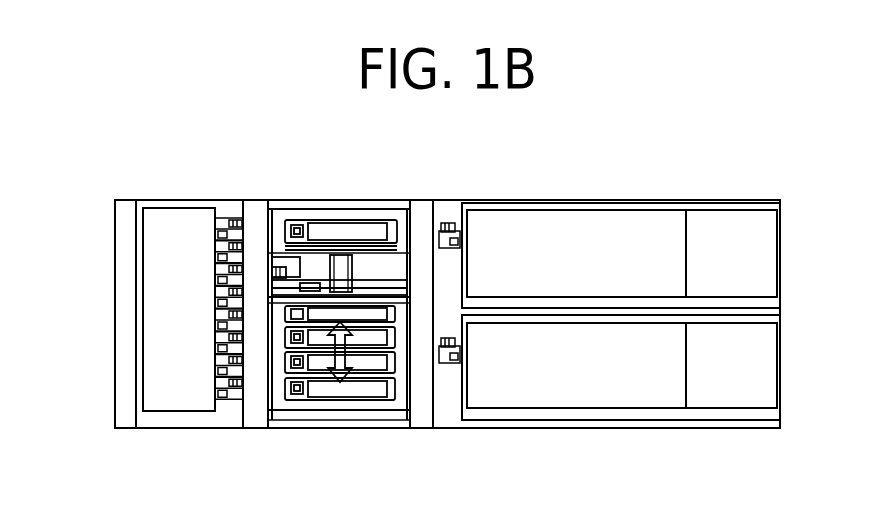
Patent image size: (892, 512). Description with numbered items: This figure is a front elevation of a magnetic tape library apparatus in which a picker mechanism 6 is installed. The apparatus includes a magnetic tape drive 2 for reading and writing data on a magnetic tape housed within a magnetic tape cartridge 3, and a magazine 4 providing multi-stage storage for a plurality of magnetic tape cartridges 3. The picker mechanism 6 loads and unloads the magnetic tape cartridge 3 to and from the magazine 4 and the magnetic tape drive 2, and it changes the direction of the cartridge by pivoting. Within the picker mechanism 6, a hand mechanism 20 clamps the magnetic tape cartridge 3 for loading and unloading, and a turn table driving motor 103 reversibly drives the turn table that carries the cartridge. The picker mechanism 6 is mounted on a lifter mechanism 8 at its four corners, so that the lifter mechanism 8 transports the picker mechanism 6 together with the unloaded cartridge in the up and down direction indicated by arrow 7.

The magnetic tape drive 2 is at (543, 220).
The magnetic tape cartridge 3 is at (226, 220).
The magazine 4 is at (173, 218).
The picker mechanism 6 is at (311, 262).
The arrow (up and down direction) 7 is at (347, 357).
The lifter mechanism 8 is at (262, 218).
The hand mechanism 20 is at (270, 275).
The turn table driving motor 103 is at (345, 257).